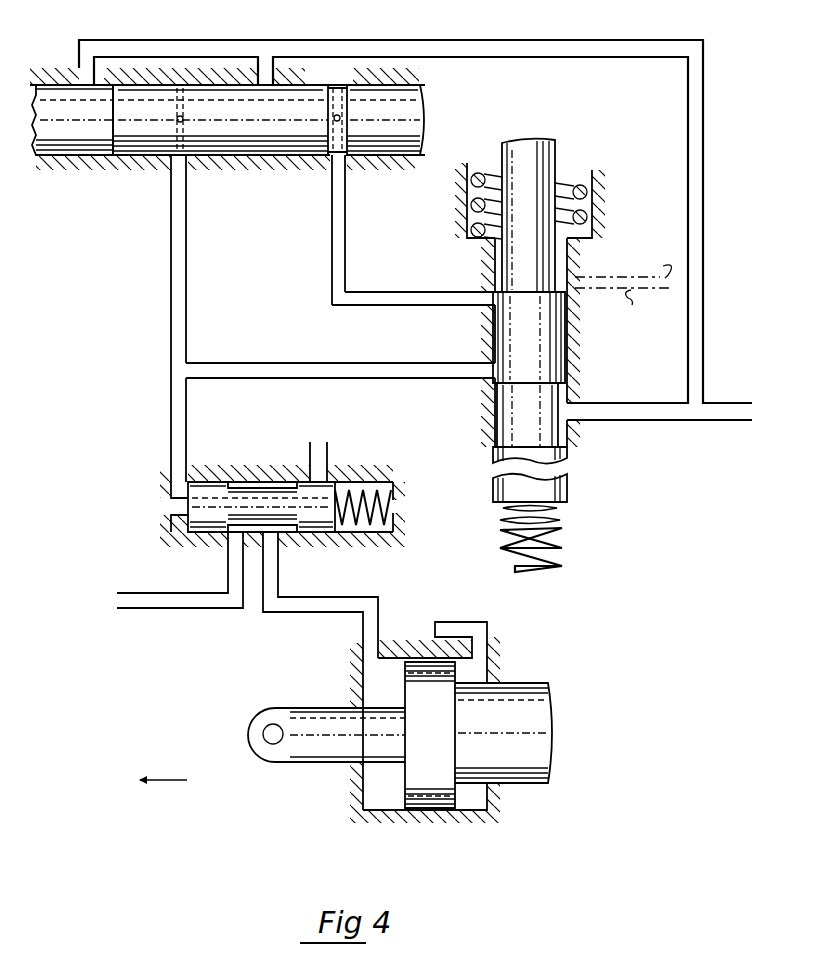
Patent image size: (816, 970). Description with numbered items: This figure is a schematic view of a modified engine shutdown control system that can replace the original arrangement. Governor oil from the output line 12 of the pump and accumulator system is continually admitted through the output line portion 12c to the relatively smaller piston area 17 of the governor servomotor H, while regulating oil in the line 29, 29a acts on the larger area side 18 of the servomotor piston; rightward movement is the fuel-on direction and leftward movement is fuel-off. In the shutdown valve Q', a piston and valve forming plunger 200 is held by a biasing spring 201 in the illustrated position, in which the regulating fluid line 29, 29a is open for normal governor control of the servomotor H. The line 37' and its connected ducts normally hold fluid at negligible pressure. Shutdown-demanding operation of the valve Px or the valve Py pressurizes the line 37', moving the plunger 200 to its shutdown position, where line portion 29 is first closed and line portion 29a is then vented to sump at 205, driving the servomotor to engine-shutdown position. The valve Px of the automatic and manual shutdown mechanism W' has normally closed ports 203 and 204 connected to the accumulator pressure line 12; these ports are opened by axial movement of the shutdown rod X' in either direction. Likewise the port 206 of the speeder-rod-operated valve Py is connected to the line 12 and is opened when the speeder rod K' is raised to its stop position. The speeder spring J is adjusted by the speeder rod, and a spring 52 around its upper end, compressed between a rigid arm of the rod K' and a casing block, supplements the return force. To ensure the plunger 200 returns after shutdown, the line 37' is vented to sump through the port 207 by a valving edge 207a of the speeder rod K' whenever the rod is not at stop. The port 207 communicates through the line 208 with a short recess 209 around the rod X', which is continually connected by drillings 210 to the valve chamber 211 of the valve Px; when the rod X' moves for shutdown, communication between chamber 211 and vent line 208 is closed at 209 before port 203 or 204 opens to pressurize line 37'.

The port 204 is at (79, 60).
The port 203 is at (274, 74).
The shutdown rod X' is at (253, 120).
The automatic and manual shutdown mechanism W' is at (217, 131).
The valve Px is at (102, 169).
The drillings 210 is at (264, 130).
The valve chamber 211 is at (211, 154).
The recess 209 is at (347, 160).
The spring 52 is at (590, 222).
The line 208 is at (364, 292).
The port 207 is at (495, 293).
The valving edge 207a is at (530, 293).
The line 37' is at (340, 346).
The port 206 is at (493, 370).
The valve Py is at (576, 412).
The output line 12 is at (748, 406).
The speeder rod K' is at (549, 477).
The speeder spring J is at (560, 538).
The plunger 200 is at (205, 482).
The vent 205 is at (320, 476).
The biasing spring 201 is at (375, 480).
The shutdown valve Q' is at (271, 520).
The regulating fluid line portion 29 is at (162, 603).
The regulating fluid line portion 29a is at (320, 604).
The output line portion 12c is at (490, 641).
The larger area side 18 is at (396, 803).
The smaller piston area 17 is at (455, 801).
The governor servomotor H is at (510, 801).